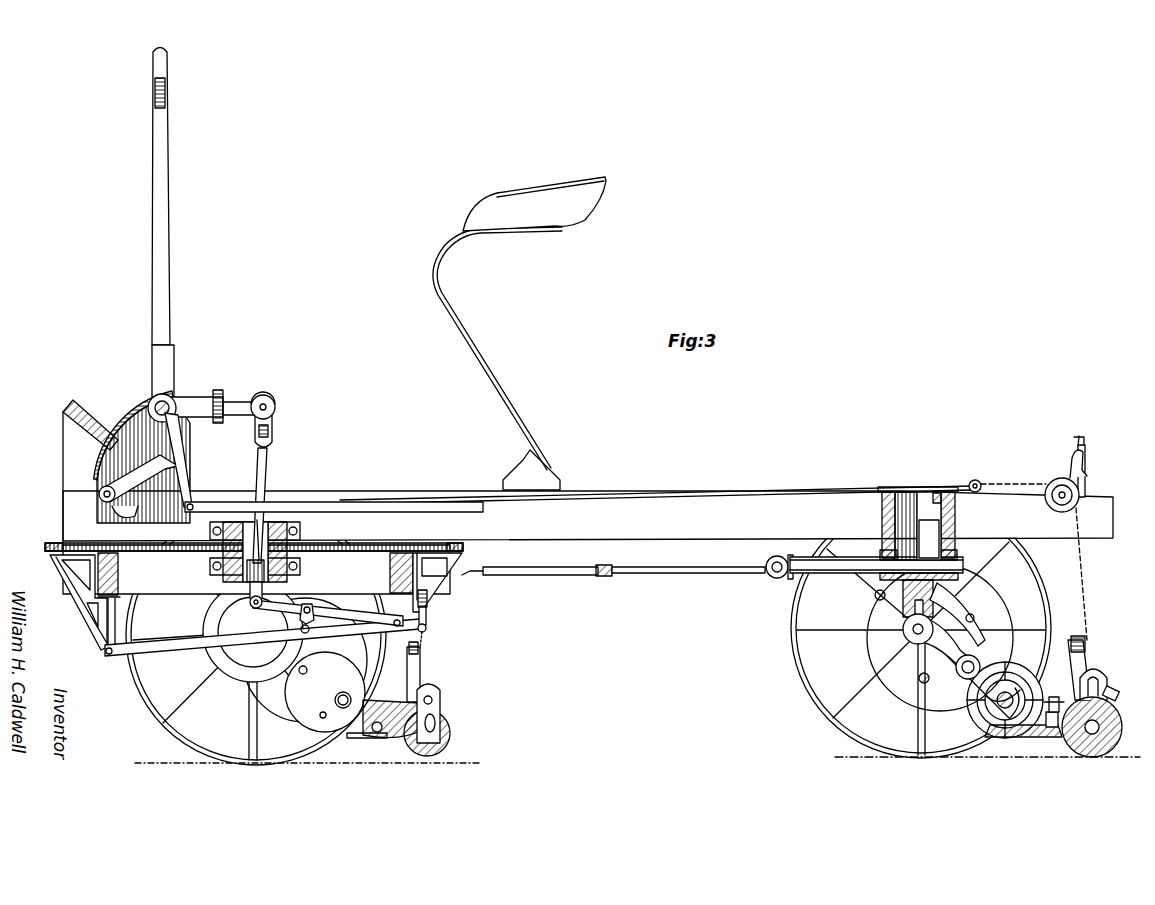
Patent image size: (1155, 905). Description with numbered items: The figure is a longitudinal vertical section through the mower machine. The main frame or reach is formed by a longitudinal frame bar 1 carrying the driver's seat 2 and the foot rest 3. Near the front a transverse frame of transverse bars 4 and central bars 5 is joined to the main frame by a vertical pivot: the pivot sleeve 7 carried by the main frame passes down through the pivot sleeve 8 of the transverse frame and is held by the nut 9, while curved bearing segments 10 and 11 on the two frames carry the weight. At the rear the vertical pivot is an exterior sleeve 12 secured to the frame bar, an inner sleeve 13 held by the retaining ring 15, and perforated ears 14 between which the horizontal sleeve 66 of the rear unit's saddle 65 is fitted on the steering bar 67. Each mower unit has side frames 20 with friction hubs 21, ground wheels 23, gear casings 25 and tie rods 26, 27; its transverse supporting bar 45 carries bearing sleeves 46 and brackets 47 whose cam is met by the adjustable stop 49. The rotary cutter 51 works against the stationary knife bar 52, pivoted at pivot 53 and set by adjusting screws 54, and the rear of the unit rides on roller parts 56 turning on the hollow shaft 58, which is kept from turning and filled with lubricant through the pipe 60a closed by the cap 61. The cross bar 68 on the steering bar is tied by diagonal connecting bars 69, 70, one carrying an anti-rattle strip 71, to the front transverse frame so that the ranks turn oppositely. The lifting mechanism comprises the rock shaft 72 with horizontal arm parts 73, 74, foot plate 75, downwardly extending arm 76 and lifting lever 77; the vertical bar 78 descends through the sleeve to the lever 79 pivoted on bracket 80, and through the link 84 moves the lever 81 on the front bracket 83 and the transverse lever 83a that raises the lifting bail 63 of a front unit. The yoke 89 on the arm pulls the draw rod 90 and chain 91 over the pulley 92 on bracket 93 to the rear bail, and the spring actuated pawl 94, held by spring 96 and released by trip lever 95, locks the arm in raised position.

The longitudinal frame bar 1 is at (588, 516).
The driver's seat 2 is at (588, 210).
The foot rest 3 is at (85, 415).
The transverse bar 4 is at (105, 572).
The central bar 5 is at (256, 569).
The pivot sleeve 7 is at (262, 520).
The pivot sleeve 8 is at (300, 545).
The nut 9 is at (226, 572).
The bearing segment 10 is at (50, 544).
The bearing segment 11 is at (45, 550).
The exterior sleeve 12 is at (884, 510).
The inner sleeve 13 is at (905, 530).
The perforated ear 14 is at (878, 597).
The retaining ring 15 is at (935, 490).
The side frame 20 is at (958, 700).
The friction hub 21 is at (916, 648).
The ground wheel 23 is at (310, 760).
The gear casing 25 is at (290, 697).
The tie rod 26 is at (876, 591).
The tie rod 27 is at (920, 685).
The transverse supporting bar 45 is at (975, 612).
The bearing sleeve 46 is at (912, 640).
The bracket 47 is at (960, 635).
The adjustable stop 49 is at (956, 670).
The rotary cutter 51 is at (365, 678).
The stationary knife bar 52 is at (1050, 740).
The pivot 53 is at (1020, 740).
The adjusting screw 54 is at (1054, 697).
The roller part 56 is at (1105, 755).
The hollow shaft 58 is at (1088, 735).
The pipe 60a is at (1127, 699).
The cap 61 is at (1104, 686).
The lifting bail 63 is at (1087, 660).
The saddle 65 is at (868, 666).
The horizontal sleeve 66 is at (925, 560).
The steering bar 67 is at (840, 576).
The cross bar 68 is at (770, 578).
The diagonal connecting bar 69 is at (690, 574).
The diagonal connecting bar 70 is at (540, 577).
The strip 71 is at (587, 578).
The rock shaft 72 is at (178, 395).
The horizontal arm part 73 is at (195, 398).
The horizontal arm part 74 is at (240, 404).
The foot plate 75 is at (275, 398).
The downwardly extending arm 76 is at (180, 450).
The lifting lever 77 is at (160, 240).
The vertical bar 78 is at (267, 470).
The lever 79 is at (360, 614).
The bracket 80 is at (372, 605).
The lever 81 is at (188, 648).
The front bracket 83 is at (100, 636).
The transverse lever 83a is at (428, 618).
The link 84 is at (310, 628).
The yoke 89 is at (210, 501).
The draw rod 90 is at (620, 493).
The chain 91 is at (1008, 482).
The pulley 92 is at (1070, 492).
The bracket 93 is at (1090, 466).
The spring actuated pawl 94 is at (122, 508).
The trip lever 95 is at (138, 402).
The spring 96 is at (105, 487).